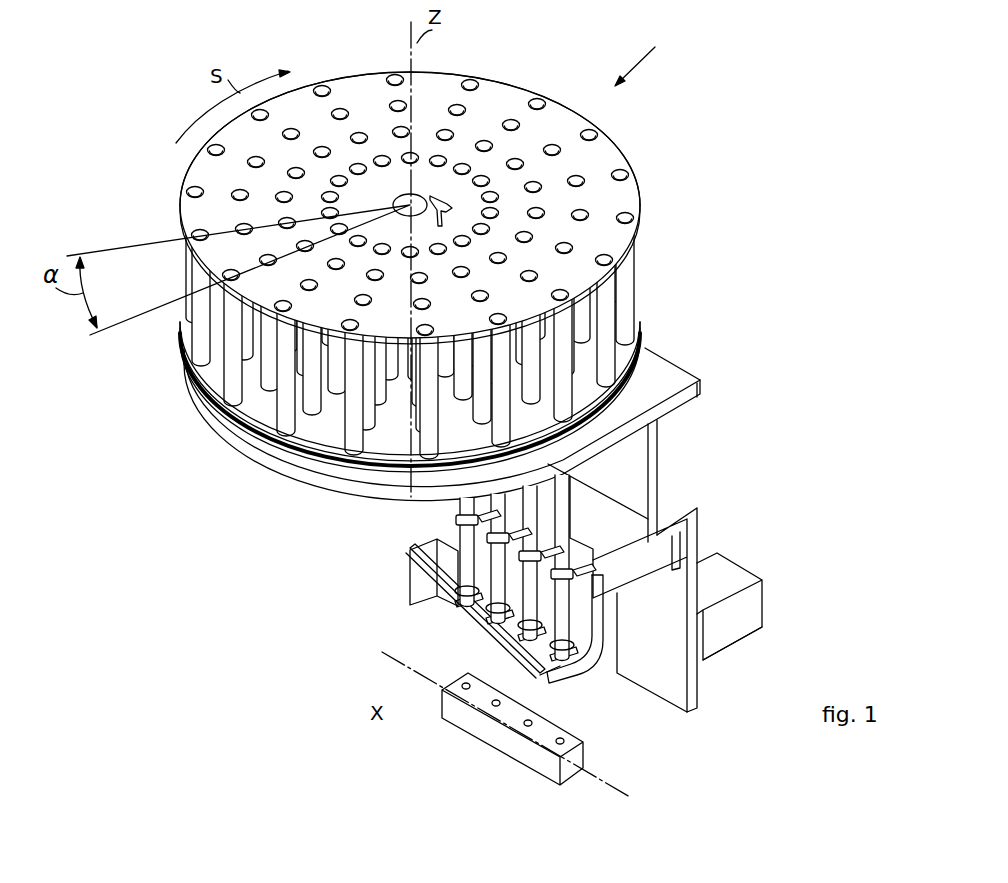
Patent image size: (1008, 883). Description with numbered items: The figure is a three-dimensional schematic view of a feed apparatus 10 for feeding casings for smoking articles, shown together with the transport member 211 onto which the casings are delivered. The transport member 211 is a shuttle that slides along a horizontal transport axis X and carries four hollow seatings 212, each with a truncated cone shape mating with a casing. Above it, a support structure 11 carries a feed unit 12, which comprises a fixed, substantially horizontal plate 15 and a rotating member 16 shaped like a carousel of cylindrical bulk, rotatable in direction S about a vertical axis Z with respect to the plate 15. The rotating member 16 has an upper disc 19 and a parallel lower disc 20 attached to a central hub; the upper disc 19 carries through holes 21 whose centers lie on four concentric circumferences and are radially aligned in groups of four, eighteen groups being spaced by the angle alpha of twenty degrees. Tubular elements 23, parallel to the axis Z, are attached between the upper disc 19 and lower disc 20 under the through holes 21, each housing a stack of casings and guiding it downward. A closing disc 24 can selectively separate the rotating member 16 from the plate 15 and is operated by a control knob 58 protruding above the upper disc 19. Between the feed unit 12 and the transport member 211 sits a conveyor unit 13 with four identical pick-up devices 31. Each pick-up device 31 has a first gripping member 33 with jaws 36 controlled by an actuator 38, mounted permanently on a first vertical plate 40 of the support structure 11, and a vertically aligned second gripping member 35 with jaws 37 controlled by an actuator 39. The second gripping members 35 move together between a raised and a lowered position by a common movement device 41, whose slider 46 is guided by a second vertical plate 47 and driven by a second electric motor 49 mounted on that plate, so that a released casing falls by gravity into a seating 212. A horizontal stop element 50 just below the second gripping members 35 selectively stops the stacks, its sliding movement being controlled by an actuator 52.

The feed apparatus 10 is at (651, 53).
The support structure 11 is at (706, 390).
The feed unit 12 is at (647, 173).
The conveyor unit 13 is at (354, 567).
The plate 15 is at (667, 357).
The rotating member 16 is at (653, 218).
The upper disc 19 is at (500, 92).
The lower disc 20 is at (360, 480).
The through holes 21 is at (520, 160).
The tubular elements 23 is at (601, 325).
The closing disc 24 is at (612, 402).
The pick-up devices 31 is at (544, 667).
The first gripping member 33 is at (455, 521).
The second gripping member 35 is at (596, 660).
The jaws 36 is at (460, 522).
The jaws 37 is at (580, 652).
The actuator 38 is at (588, 512).
The actuator 39 is at (612, 600).
The first vertical plate 40 is at (654, 450).
The movement device 41 is at (716, 669).
The slider 46 is at (682, 560).
The second vertical plate 47 is at (697, 540).
The second electric motor 49 is at (752, 620).
The stop element 50 is at (450, 636).
The actuator 52 is at (425, 583).
The control knob 58 is at (445, 207).
The transport member 211 is at (490, 728).
The seatings 212 is at (466, 690).